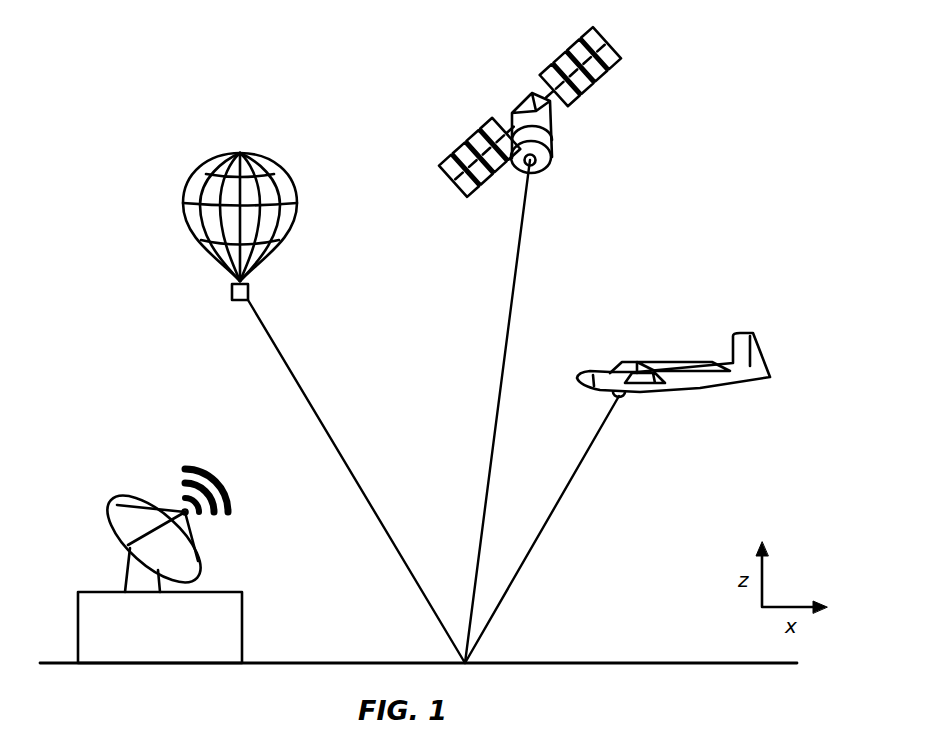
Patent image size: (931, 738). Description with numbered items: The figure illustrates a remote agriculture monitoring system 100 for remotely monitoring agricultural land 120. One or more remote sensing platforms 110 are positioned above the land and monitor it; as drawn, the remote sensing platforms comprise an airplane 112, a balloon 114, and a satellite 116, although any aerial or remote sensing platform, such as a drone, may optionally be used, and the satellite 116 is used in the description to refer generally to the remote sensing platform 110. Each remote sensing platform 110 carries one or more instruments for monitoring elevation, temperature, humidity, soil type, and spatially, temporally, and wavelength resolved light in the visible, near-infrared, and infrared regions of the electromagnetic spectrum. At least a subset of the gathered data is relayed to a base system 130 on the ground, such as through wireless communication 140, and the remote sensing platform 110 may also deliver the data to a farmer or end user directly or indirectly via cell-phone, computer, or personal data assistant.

The remote agriculture monitoring system 100 is at (172, 51).
The remote sensing platform 110 is at (713, 145).
The airplane 112 is at (753, 332).
The balloon 114 is at (267, 158).
The satellite 116 is at (607, 44).
The agricultural land 120 is at (608, 663).
The base system 130 is at (210, 592).
The wireless communication 140 is at (178, 452).